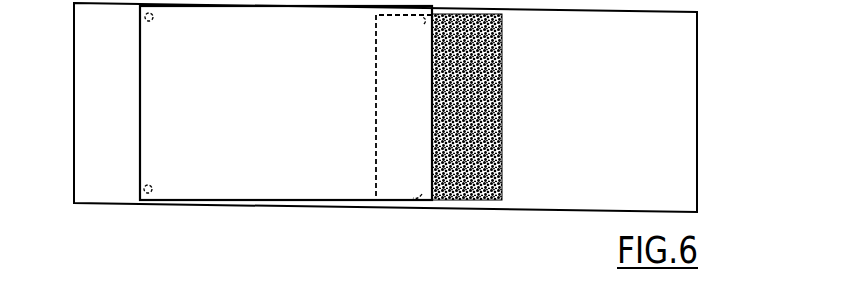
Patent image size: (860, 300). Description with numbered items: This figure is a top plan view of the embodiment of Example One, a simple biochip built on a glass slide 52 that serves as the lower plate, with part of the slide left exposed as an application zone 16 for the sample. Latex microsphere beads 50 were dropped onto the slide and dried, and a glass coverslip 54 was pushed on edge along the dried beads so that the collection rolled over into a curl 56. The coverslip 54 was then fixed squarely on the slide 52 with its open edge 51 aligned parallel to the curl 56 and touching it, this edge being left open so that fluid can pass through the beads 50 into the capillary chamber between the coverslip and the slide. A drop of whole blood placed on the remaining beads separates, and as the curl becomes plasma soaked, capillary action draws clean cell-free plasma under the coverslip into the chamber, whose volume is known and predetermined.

The application zone 16 is at (670, 33).
The latex microsphere beads 50 is at (503, 137).
The masked region 51 is at (397, 167).
The glass slide 52 is at (635, 140).
The glass coverslip 54 is at (279, 129).
The curl 56 is at (503, 80).